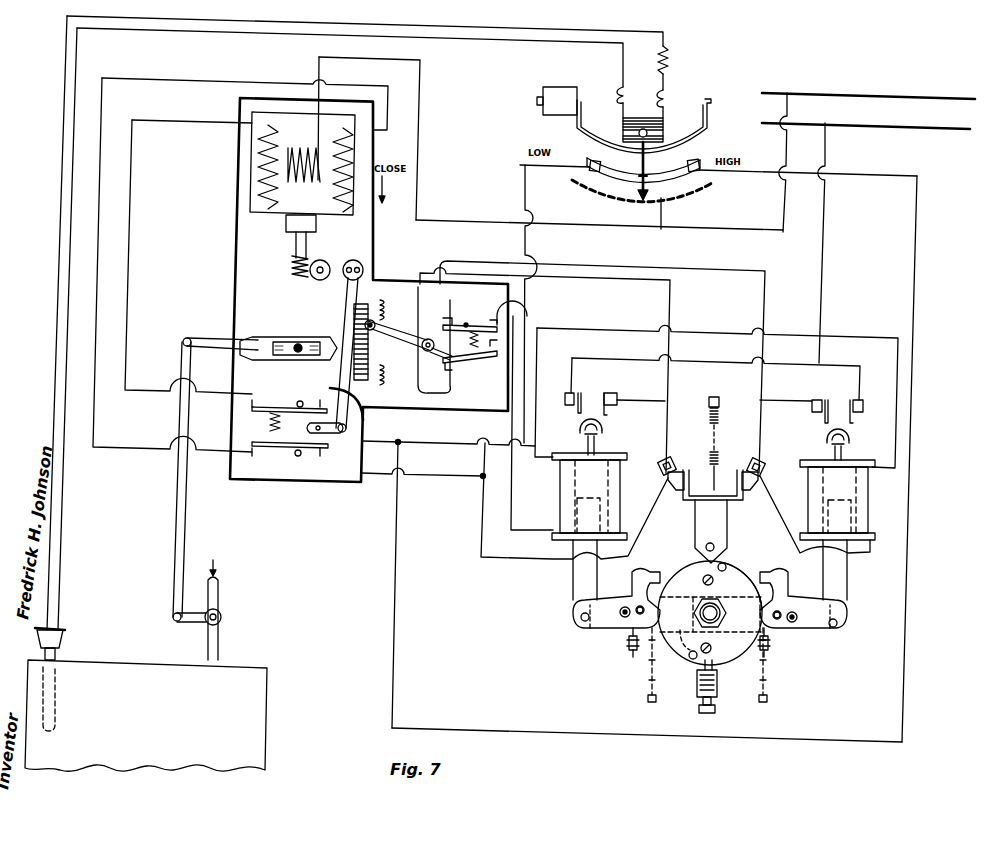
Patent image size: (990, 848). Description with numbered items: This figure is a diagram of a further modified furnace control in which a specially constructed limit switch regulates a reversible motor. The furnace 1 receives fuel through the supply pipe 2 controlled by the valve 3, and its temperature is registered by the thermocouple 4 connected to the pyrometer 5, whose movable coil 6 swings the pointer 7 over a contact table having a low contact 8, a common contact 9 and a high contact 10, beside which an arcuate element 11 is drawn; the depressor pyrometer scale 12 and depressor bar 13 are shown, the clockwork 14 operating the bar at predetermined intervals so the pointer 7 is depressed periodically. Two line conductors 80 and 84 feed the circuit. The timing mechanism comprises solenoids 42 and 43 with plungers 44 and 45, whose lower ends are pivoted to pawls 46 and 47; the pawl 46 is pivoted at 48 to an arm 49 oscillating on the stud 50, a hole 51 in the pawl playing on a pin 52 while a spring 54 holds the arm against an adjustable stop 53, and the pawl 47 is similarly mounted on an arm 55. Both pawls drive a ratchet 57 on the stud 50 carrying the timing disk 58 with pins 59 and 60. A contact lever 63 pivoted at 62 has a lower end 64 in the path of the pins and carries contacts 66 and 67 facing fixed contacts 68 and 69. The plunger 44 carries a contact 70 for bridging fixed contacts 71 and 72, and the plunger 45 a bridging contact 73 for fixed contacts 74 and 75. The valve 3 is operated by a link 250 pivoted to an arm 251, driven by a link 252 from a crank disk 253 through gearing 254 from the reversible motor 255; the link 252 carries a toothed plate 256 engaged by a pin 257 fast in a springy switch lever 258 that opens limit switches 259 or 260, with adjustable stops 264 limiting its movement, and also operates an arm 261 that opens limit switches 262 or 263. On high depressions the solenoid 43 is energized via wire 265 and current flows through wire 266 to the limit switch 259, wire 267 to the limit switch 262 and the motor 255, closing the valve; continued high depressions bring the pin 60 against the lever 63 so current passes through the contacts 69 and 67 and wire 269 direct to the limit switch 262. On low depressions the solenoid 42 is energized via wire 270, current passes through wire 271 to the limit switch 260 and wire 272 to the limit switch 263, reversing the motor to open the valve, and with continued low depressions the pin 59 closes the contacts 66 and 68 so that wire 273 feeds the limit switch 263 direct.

The furnace 1 is at (146, 715).
The supply pipe 2 is at (219, 584).
The valve 3 is at (222, 618).
The thermocouple 4 is at (54, 690).
The pyrometer 5 is at (640, 114).
The movable coil 6 is at (668, 96).
The pointer 7 is at (648, 133).
The low contact 8 is at (596, 162).
The common contact 9 is at (610, 178).
The high contact 10 is at (694, 160).
The resistance arc 11 is at (688, 188).
The depressor pyrometer scale 12 is at (713, 184).
The depressor bar 13 is at (578, 126).
The clockwork 14 is at (557, 101).
The solenoid 42 is at (550, 484).
The solenoid 43 is at (883, 484).
The plunger 44 is at (585, 570).
The plunger 45 is at (833, 570).
The pawl 46 is at (597, 628).
The pawl 47 is at (815, 628).
The pivot 48 is at (641, 604).
The arm 49 is at (637, 605).
The stud 50 is at (715, 606).
The hole 51 is at (795, 622).
The pin 52 is at (623, 618).
The adjustable stop 53 is at (632, 652).
The spring 54 is at (764, 684).
The arm 55 is at (782, 610).
The ratchet 57 is at (730, 660).
The timing disk 58 is at (735, 572).
The pin 59 is at (700, 648).
The pin 60 is at (724, 563).
The pivot 62 is at (711, 531).
The contact lever 63 is at (713, 485).
The lower end 64 is at (700, 551).
The contact 66 is at (674, 470).
The contact 67 is at (745, 470).
The fixed contact 68 is at (663, 474).
The fixed contact 69 is at (808, 505).
The contact 70 is at (580, 428).
The fixed contact 71 is at (576, 394).
The fixed contact 72 is at (612, 394).
The bridging contact 73 is at (848, 436).
The fixed contact 74 is at (817, 400).
The fixed contact 75 is at (859, 400).
The supply line 80 is at (866, 117).
The supply line 84 is at (868, 87).
The link 250 is at (175, 505).
The arm 251 is at (258, 337).
The link 252 is at (352, 372).
The crank disk 253 is at (350, 260).
The gearing 254 is at (290, 266).
The reversible motor 255 is at (302, 185).
The toothed plate 256 is at (373, 292).
The pin 257 is at (364, 323).
The switch lever 258 is at (408, 338).
The limit switch 259 is at (474, 322).
The limit switch 260 is at (470, 366).
The arm 261 is at (333, 437).
The limit switch 262 is at (289, 410).
The limit switch 263 is at (290, 460).
The adjustable stops 264 is at (386, 327).
The wire 265 is at (914, 254).
The wire 266 is at (602, 362).
The wire 267 is at (448, 436).
The wire 269 is at (647, 592).
The wire 270 is at (521, 204).
The wire 271 is at (558, 282).
The wire 272 is at (427, 476).
The wire 273 is at (501, 558).